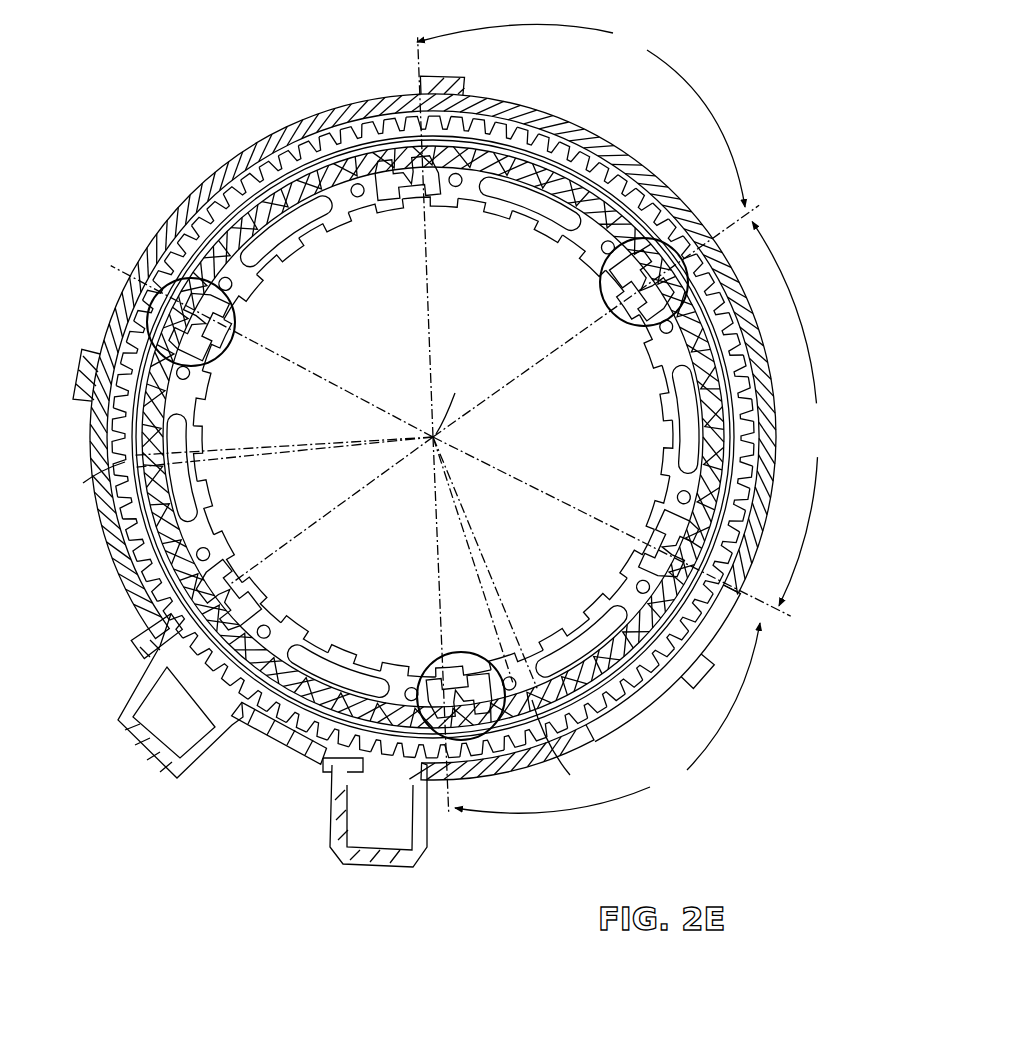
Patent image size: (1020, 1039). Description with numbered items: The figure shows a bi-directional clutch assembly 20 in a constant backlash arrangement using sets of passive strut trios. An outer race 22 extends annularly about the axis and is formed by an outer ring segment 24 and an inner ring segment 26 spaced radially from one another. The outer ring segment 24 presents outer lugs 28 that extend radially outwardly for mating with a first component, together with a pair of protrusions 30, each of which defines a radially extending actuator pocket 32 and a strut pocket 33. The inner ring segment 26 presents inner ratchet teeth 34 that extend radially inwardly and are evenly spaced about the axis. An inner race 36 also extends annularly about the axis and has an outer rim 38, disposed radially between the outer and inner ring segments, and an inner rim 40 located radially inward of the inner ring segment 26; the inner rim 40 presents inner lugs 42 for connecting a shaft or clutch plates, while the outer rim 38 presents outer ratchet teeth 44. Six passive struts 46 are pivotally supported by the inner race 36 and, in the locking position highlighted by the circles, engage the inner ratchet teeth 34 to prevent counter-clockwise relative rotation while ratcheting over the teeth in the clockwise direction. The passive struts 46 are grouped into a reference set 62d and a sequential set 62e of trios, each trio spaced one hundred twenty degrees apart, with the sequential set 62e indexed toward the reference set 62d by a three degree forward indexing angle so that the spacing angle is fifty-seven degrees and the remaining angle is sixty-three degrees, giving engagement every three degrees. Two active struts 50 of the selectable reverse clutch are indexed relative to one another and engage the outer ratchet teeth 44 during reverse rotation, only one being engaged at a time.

The bi-directional clutch assembly 20 is at (170, 148).
The outer race 22 is at (727, 255).
The outer ring segment 24 is at (740, 298).
The inner ring segment 26 is at (710, 372).
The outer lugs 28 is at (705, 690).
The protrusions 30 is at (352, 772).
The actuator pocket 32 is at (150, 768).
The strut pocket 33 is at (318, 776).
The inner ratchet teeth 34 is at (185, 430).
The inner race 36 is at (285, 612).
The outer rim 38 is at (95, 400).
The inner rim 40 is at (387, 491).
The inner lugs 42 is at (370, 655).
The outer ratchet teeth 44 is at (140, 490).
The passive struts 46 is at (222, 338).
The active strut 50 is at (273, 758).
The first set of passive strut trios 62d is at (117, 665).
The sequential set of passive strut trios 62e is at (427, 515).